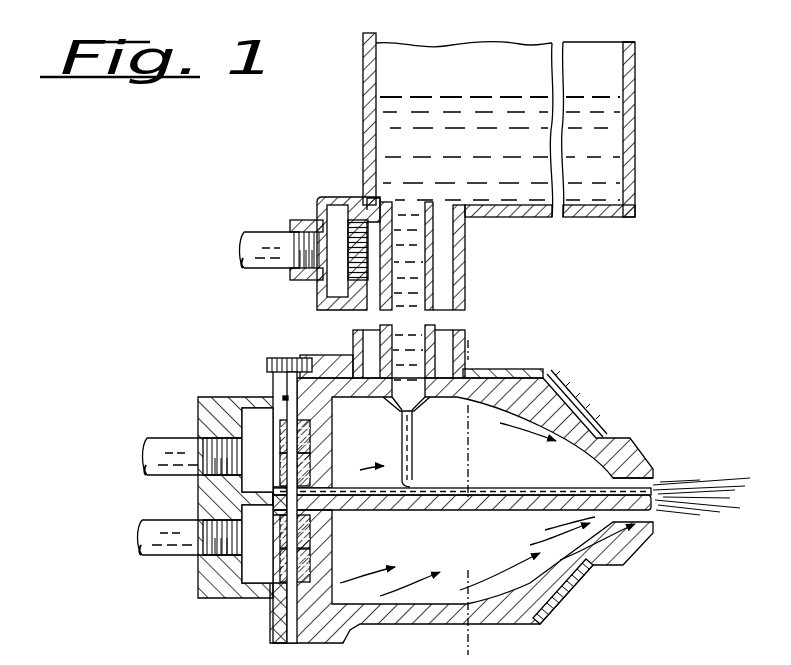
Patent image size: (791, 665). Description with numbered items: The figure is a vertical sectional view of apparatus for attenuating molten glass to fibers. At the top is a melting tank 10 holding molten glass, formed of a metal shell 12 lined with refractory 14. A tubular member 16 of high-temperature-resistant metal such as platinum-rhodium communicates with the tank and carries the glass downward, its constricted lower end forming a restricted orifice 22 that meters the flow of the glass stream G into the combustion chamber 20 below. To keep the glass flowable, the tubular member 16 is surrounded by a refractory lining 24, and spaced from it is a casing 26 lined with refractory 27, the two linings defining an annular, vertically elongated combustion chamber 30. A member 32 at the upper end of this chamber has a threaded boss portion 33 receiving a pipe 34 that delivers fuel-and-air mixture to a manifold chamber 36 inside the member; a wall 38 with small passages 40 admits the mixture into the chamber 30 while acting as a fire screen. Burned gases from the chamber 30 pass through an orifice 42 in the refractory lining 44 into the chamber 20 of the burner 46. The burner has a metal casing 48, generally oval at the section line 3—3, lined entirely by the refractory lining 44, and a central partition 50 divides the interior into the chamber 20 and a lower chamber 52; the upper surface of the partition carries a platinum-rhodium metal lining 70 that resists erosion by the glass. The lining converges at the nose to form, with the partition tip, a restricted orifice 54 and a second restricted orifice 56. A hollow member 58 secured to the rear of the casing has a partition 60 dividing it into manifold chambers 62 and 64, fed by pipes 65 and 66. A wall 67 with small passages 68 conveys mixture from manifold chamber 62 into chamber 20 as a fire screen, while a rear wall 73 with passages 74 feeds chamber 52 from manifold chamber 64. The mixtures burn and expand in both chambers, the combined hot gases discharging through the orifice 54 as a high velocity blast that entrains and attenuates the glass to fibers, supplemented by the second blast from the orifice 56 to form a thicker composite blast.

The melting tank 10 is at (637, 166).
The metal shell 12 is at (635, 102).
The refractory 14 is at (627, 57).
The tubular member 16 is at (433, 280).
The refractory lining 24 is at (453, 298).
The small passages 40 is at (378, 208).
The member 32 is at (325, 214).
The manifold chamber 36 is at (338, 222).
The wall 38 is at (346, 270).
The boss portion 33 is at (304, 225).
The pipe 34 is at (282, 268).
The annular combustion chamber 30 is at (376, 332).
The refractory 27 is at (455, 332).
The casing 26 is at (462, 347).
The section line 3 is at (472, 352).
The member 58 is at (272, 390).
The refractory lining 44 is at (535, 389).
The burner 46 is at (580, 399).
The orifice 42 is at (418, 404).
The restricted orifice 22 is at (413, 418).
The liquid film gap G is at (413, 463).
The combustion chamber 20 is at (518, 441).
The metal lining 70 is at (377, 494).
The partition 50 is at (386, 511).
The chamber 52 is at (461, 576).
The casing 48 is at (570, 596).
The restricted orifice 54 is at (656, 482).
The second restricted orifice 56 is at (657, 518).
The partition 60 is at (258, 487).
The manifold chamber 62 is at (257, 450).
The manifold chamber 64 is at (257, 544).
The pipe 65 is at (184, 437).
The pipe 66 is at (188, 556).
The wall 67 is at (310, 423).
The small passages 68 is at (310, 448).
The rear wall 73 is at (310, 530).
The passages 74 is at (310, 560).